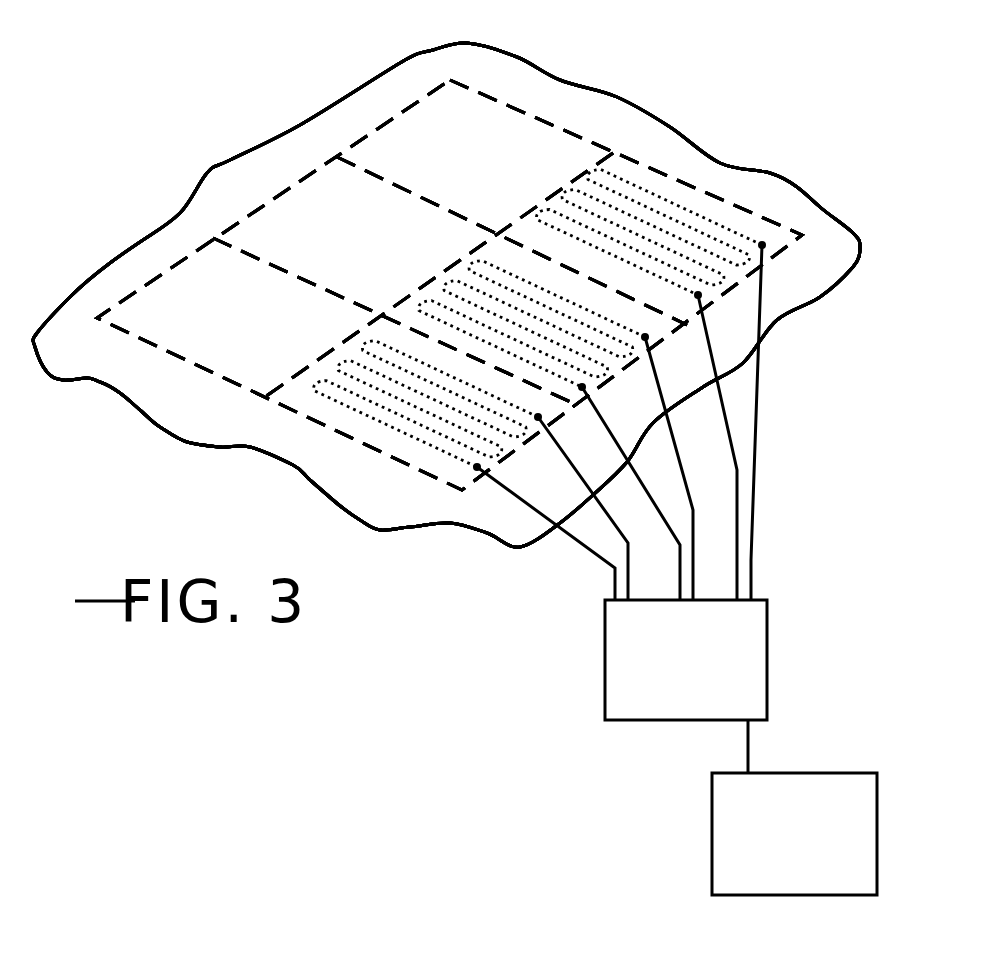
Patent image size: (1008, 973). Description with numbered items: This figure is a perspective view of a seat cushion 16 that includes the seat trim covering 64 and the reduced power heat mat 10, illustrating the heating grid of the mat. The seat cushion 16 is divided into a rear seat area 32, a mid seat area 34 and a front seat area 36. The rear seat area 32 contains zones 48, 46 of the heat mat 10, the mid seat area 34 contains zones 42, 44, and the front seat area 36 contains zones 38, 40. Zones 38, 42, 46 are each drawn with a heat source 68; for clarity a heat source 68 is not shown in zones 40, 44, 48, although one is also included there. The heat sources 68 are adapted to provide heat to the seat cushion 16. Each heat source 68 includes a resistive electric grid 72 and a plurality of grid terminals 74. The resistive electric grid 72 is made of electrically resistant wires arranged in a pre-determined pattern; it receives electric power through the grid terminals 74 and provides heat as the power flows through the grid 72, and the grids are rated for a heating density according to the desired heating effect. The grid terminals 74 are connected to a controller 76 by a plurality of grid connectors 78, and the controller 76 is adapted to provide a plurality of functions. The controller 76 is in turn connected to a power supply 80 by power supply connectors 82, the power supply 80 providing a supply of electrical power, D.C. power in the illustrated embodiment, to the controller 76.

The reduced power heat mat 10 is at (334, 151).
The seat cushion 16 is at (72, 327).
The rear seat area 32 is at (826, 222).
The mid seat area 34 is at (280, 157).
The front seat area 36 is at (110, 283).
The zone 38 is at (328, 415).
The zone 40 is at (193, 333).
The zone 42 is at (657, 328).
The zone 44 is at (293, 230).
The zone 46 is at (653, 177).
The zone 48 is at (430, 120).
The seat trim covering 64 is at (140, 240).
The heat source 68 is at (433, 450).
The resistive electric grid 72 is at (700, 213).
The grid terminals 74 is at (821, 250).
The controller 76 is at (767, 652).
The grid connectors 78 is at (600, 530).
The power supply 80 is at (782, 895).
The power supply connectors 82 is at (750, 745).